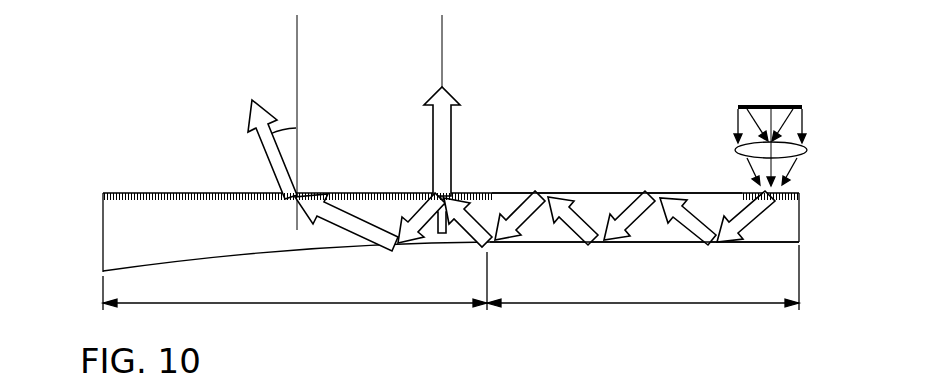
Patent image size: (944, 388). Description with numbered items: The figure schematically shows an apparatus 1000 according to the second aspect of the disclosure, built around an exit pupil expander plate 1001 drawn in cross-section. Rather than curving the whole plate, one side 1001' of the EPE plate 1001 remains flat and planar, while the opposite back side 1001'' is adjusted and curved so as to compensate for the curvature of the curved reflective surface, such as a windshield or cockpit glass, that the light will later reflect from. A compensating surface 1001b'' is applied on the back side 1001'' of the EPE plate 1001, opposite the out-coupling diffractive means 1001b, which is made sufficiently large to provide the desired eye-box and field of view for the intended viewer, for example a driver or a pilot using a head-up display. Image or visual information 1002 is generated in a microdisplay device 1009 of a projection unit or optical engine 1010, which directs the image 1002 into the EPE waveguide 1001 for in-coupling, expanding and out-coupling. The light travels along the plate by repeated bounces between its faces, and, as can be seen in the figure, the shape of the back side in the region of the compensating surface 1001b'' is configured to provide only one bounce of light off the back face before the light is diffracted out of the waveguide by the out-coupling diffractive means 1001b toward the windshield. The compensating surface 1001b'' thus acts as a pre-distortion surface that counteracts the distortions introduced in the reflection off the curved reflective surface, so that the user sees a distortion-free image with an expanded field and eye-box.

The apparatus 1000 is at (78, 243).
The EPE plate 1001 is at (501, 159).
The out-coupling diffractive means 1001b is at (444, 157).
The one side of the EPE plate 1001' is at (617, 148).
The back side of the EPE plate 1001'' is at (644, 269).
The compensating surface 1001b'' is at (451, 295).
The image/visual information 1002 is at (786, 170).
The microdisplay device 1009 is at (800, 108).
The projection unit/optical engine 1010 is at (826, 103).